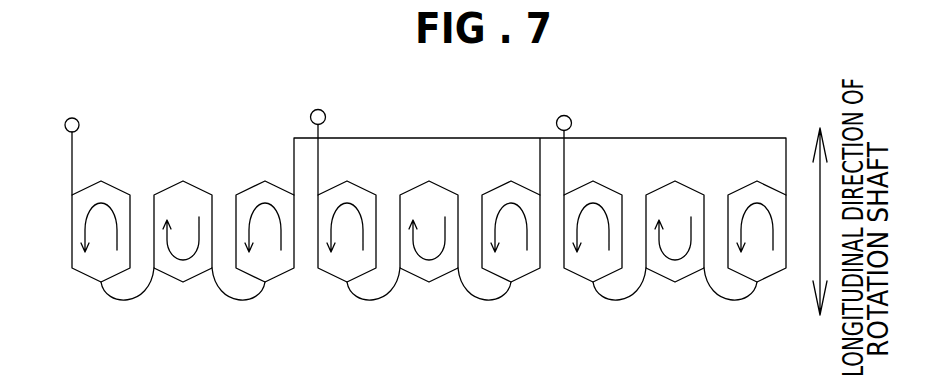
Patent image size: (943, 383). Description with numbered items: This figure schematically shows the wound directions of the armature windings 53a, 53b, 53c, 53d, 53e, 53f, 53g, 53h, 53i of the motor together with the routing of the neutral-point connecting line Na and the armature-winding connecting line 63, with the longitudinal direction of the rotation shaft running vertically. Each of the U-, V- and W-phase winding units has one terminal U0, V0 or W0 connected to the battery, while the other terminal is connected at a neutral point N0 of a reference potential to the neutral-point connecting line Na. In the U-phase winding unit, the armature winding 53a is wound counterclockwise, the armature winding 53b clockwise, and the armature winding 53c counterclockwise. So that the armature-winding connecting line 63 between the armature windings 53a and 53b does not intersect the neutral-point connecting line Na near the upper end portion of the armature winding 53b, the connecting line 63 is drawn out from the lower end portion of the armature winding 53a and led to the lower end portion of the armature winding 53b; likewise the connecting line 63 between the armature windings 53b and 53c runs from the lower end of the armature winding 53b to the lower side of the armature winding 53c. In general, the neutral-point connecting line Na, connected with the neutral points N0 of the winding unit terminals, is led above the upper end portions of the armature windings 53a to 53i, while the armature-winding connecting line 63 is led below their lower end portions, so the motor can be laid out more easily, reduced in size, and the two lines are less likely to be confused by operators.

The armature winding 53a is at (82, 277).
The armature winding 53b is at (168, 278).
The armature winding 53c is at (287, 276).
The armature winding 53d is at (325, 273).
The armature winding 53e is at (415, 280).
The armature winding 53f is at (525, 280).
The armature winding 53g is at (575, 278).
The armature winding 53h is at (658, 280).
The armature winding 53i is at (775, 280).
The armature-winding connecting line 63 is at (123, 302).
The neutral-point connecting line Na is at (428, 138).
The terminal U0 is at (87, 154).
The terminal V0 is at (332, 151).
The terminal W0 is at (581, 154).
The neutral point N0 is at (785, 126).